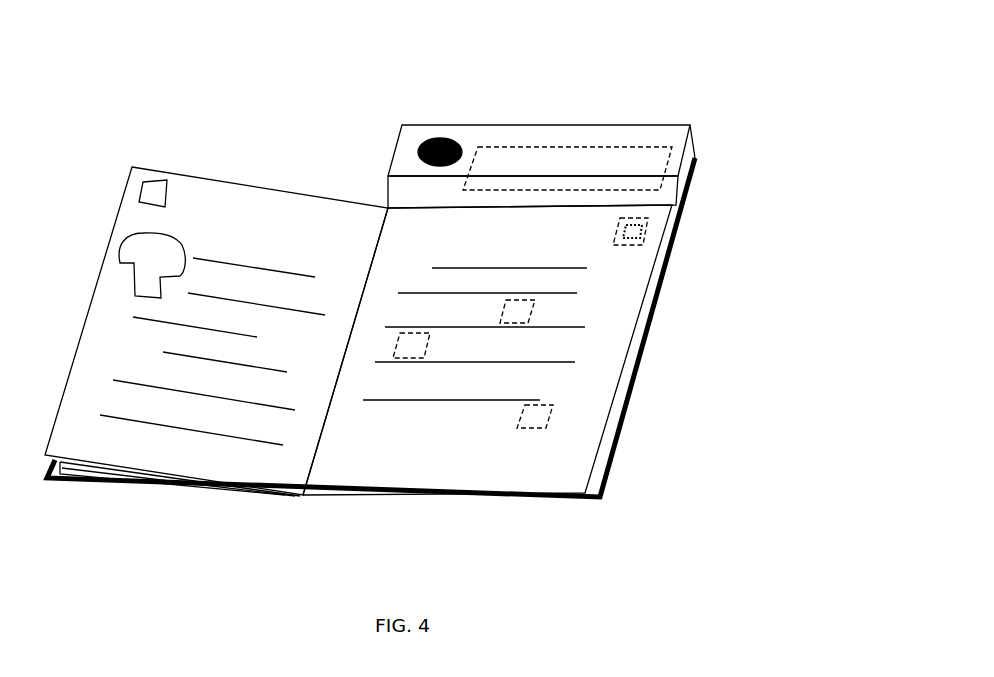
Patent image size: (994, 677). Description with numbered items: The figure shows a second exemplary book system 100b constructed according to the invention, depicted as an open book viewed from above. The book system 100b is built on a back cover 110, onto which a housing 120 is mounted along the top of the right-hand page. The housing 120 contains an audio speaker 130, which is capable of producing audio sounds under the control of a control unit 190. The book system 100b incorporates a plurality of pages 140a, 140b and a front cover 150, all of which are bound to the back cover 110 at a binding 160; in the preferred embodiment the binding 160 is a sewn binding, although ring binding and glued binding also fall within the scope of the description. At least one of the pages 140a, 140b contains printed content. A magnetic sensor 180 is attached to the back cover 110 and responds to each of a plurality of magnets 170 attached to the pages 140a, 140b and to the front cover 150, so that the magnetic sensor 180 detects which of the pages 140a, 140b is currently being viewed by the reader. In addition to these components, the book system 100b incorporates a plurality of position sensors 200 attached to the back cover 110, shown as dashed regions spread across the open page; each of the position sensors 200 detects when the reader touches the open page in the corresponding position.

The book system 100b is at (717, 127).
The back cover 110 is at (658, 290).
The housing 120 is at (615, 124).
The audio speaker 130 is at (442, 133).
The page 140a is at (108, 238).
The page 140b is at (605, 423).
The front cover 150 is at (98, 483).
The binding 160 is at (303, 497).
The magnets 170 is at (620, 230).
The magnetic sensor 180 is at (620, 233).
The control unit 190 is at (510, 155).
The position sensors 200 is at (412, 370).